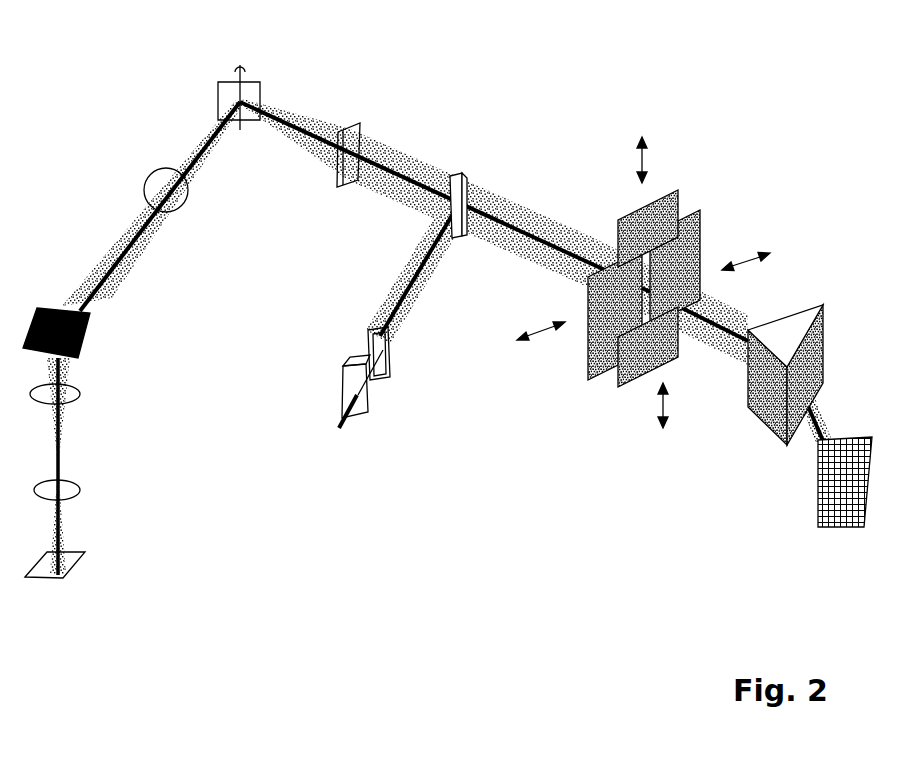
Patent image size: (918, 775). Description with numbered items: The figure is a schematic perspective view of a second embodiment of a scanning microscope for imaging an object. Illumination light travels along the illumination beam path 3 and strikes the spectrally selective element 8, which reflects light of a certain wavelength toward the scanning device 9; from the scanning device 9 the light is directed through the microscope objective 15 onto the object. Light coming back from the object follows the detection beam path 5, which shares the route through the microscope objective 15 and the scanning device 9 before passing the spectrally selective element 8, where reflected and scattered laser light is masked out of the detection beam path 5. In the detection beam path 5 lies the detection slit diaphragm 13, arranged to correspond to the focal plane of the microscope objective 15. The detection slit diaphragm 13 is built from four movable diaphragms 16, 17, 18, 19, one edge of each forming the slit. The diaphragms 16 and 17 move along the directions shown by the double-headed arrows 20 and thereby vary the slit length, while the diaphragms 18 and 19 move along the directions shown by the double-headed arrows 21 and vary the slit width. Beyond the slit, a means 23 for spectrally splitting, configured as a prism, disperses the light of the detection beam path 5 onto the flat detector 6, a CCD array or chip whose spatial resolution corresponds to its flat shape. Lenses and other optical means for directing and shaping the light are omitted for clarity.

The illumination beam path 3 is at (402, 295).
The detection beam path 5 is at (493, 207).
The detector 6 is at (818, 525).
The spectrally selective element 8 is at (456, 172).
The scanning device 9 is at (262, 82).
The detection slit diaphragm 13 is at (646, 301).
The microscope objective 15 is at (72, 490).
The diaphragm 16 is at (648, 205).
The diaphragm 17 is at (630, 388).
The diaphragm 18 is at (588, 280).
The diaphragm 19 is at (703, 272).
The double-headed arrows 20 is at (640, 163).
The double-headed arrows 21 is at (547, 335).
The means for spectrally splitting 23 is at (768, 433).